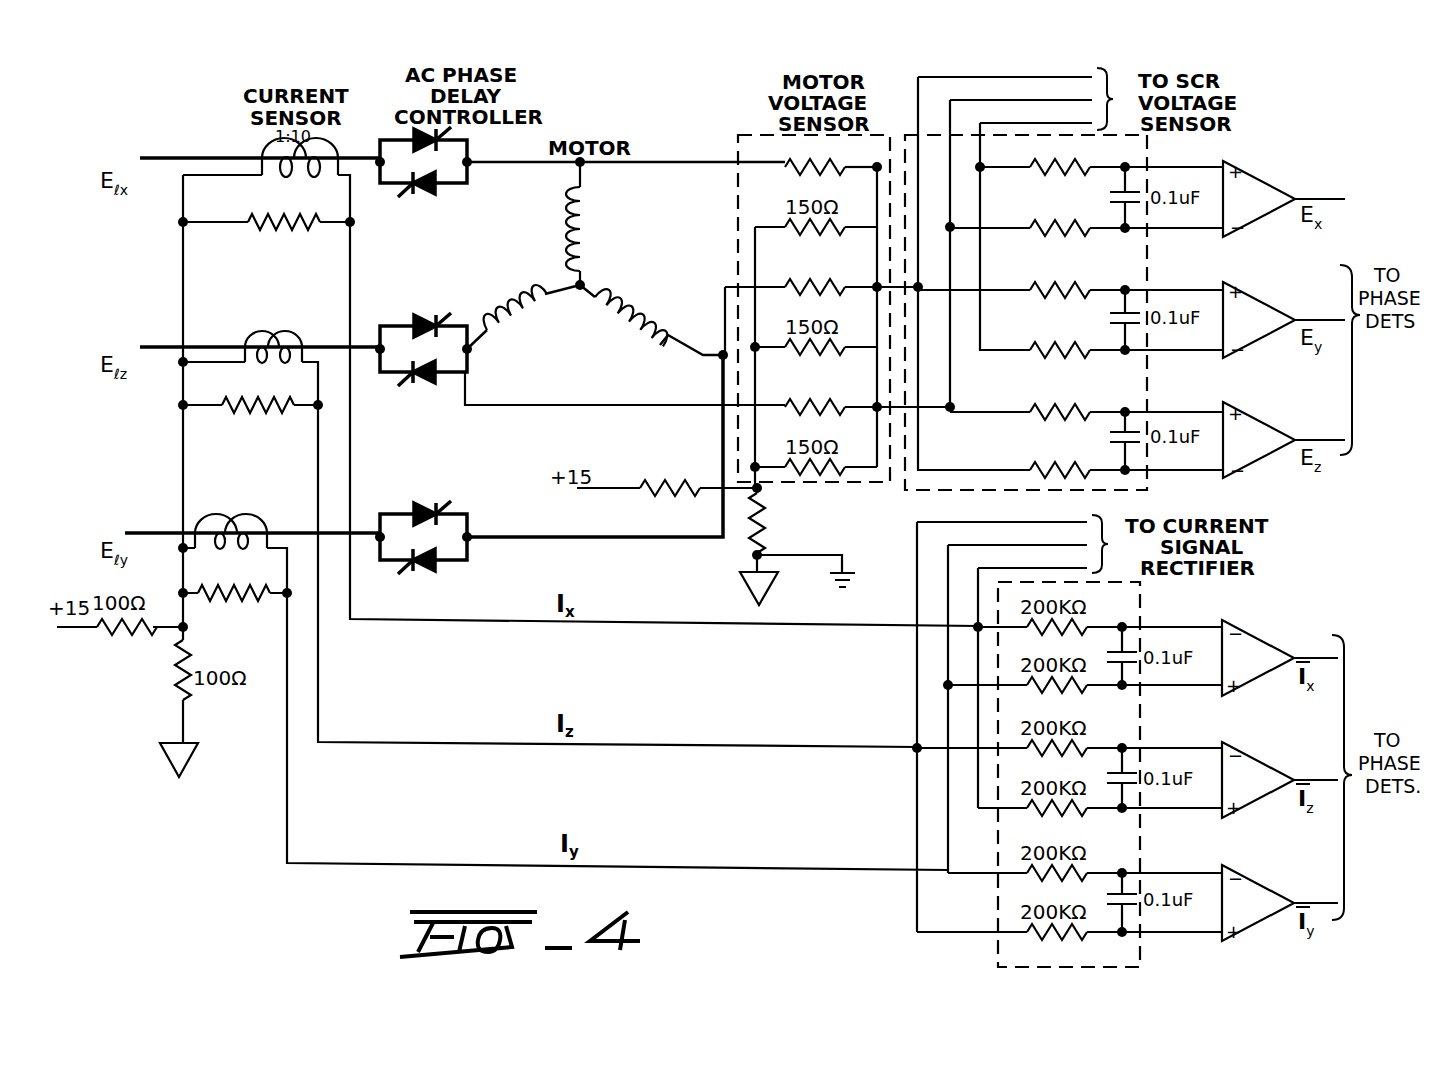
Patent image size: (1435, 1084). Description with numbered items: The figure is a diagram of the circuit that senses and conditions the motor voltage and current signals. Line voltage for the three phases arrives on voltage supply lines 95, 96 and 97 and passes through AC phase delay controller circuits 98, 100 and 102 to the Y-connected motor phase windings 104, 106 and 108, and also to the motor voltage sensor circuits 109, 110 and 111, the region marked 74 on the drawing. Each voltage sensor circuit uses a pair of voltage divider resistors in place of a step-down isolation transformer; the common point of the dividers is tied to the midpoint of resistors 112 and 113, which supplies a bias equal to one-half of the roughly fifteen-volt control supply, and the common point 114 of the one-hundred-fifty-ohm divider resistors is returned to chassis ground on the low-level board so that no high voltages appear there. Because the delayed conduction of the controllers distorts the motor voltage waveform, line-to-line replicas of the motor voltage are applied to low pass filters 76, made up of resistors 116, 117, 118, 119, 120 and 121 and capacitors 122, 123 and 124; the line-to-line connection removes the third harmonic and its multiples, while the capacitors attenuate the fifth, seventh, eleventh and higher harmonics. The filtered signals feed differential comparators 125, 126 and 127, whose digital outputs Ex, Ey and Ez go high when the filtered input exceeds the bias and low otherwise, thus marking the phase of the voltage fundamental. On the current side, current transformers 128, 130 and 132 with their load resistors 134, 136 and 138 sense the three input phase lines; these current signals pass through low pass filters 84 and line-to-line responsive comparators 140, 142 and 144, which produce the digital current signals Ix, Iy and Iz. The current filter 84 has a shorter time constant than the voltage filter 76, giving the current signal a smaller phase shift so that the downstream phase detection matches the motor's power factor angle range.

The motor voltage sensor 74 is at (738, 145).
The low pass filter 76 is at (1150, 153).
The low pass filter 84 is at (1140, 582).
The voltage supply line 95 is at (154, 158).
The voltage supply line 96 is at (156, 533).
The voltage supply line 97 is at (156, 347).
The AC phase delay controller circuit 98 is at (464, 188).
The AC phase delay controller circuit 100 is at (428, 502).
The AC phase delay controller circuit 102 is at (440, 324).
The motor phase winding 104 is at (594, 221).
The motor phase winding 106 is at (642, 322).
The motor phase winding 108 is at (520, 325).
The motor voltage sensor circuit 109 is at (829, 195).
The motor voltage sensor circuit 110 is at (829, 315).
The motor voltage sensor circuit 111 is at (828, 435).
The resistor 112 is at (674, 502).
The resistor 113 is at (744, 539).
The common point 114 is at (721, 375).
The resistor 116 is at (1046, 176).
The resistor 117 is at (1048, 236).
The resistor 118 is at (1046, 297).
The resistor 119 is at (1046, 358).
The resistor 120 is at (1046, 418).
The resistor 121 is at (1020, 486).
The capacitor 122 is at (1134, 204).
The capacitor 123 is at (1134, 324).
The capacitor 124 is at (1134, 446).
The differential comparator 125 is at (1280, 192).
The differential comparator 126 is at (1268, 316).
The differential comparator 127 is at (1268, 436).
The current transformer 128 is at (263, 152).
The current transformer 130 is at (232, 522).
The current transformer 132 is at (265, 330).
The load resistor 134 is at (268, 230).
The load resistor 136 is at (240, 600).
The load resistor 138 is at (264, 408).
The line-to-line signal responsive comparator 140 is at (1272, 650).
The line-to-line signal responsive comparator 142 is at (1266, 893).
The line-to-line signal responsive comparator 144 is at (1258, 768).